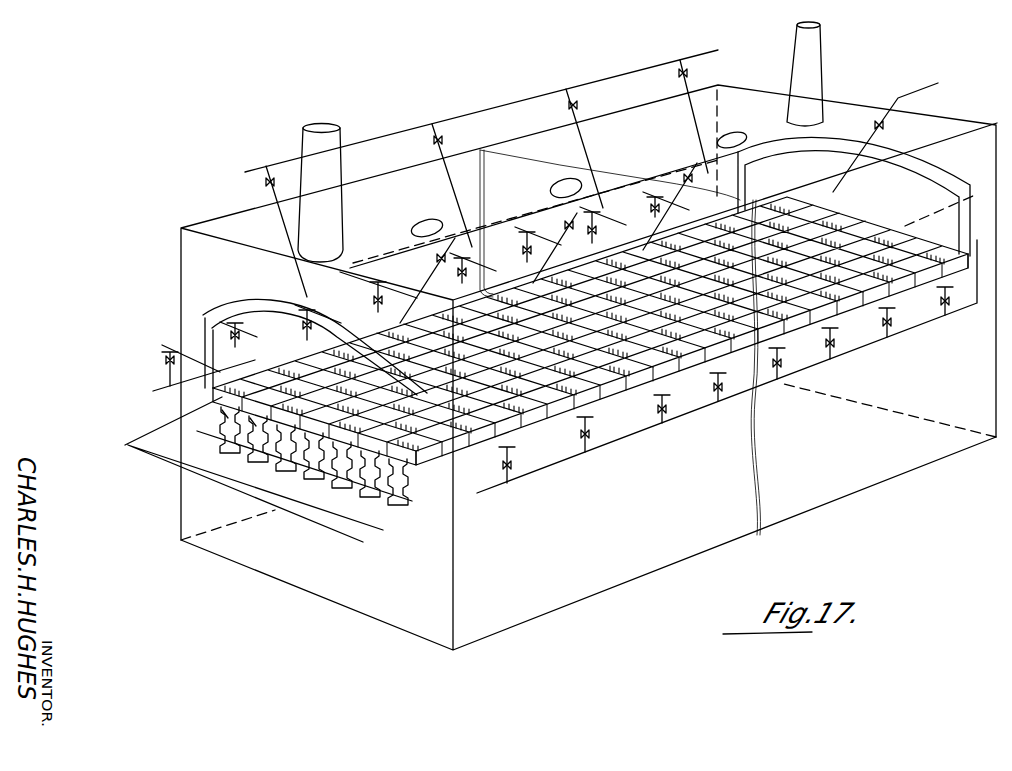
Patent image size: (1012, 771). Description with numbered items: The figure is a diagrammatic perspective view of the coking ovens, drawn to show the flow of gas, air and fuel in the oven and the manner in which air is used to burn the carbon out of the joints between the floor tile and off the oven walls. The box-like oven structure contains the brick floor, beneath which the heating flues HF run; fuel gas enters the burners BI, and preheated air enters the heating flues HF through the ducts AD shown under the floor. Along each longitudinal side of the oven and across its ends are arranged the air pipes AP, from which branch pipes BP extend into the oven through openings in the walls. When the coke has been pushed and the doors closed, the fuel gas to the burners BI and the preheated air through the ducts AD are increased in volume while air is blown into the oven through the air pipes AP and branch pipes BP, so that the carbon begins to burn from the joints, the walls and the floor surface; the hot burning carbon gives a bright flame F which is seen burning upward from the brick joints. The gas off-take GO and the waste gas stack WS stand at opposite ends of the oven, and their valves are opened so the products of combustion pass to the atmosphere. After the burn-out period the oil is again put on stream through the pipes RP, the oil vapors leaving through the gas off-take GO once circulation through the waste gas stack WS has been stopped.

The waste gas stack WS is at (812, 62).
The gas off-take GO is at (320, 193).
The oil pipe RP is at (288, 231).
The branch pipe BP is at (253, 338).
The air pipe AP is at (165, 384).
The flame F is at (316, 341).
The heating flue HF is at (222, 410).
The burner BI is at (197, 436).
The duct AD is at (181, 466).